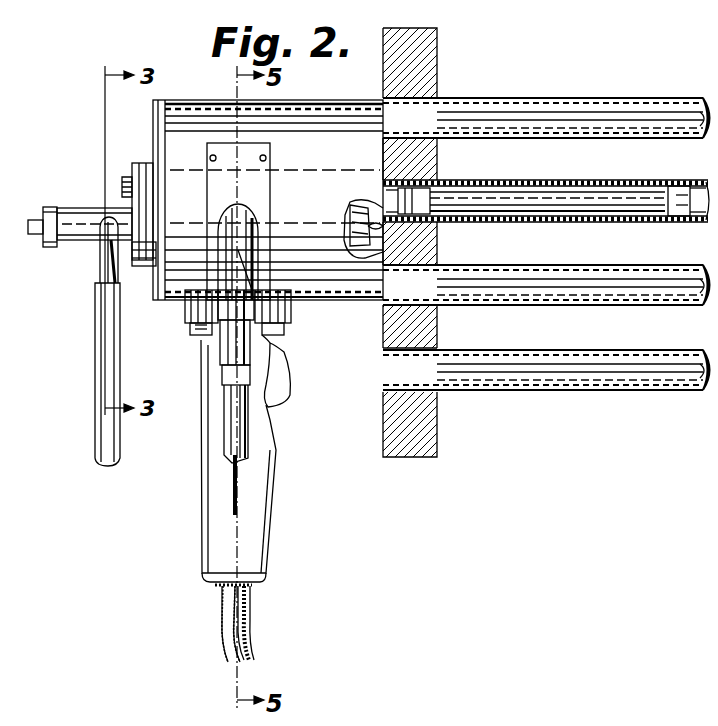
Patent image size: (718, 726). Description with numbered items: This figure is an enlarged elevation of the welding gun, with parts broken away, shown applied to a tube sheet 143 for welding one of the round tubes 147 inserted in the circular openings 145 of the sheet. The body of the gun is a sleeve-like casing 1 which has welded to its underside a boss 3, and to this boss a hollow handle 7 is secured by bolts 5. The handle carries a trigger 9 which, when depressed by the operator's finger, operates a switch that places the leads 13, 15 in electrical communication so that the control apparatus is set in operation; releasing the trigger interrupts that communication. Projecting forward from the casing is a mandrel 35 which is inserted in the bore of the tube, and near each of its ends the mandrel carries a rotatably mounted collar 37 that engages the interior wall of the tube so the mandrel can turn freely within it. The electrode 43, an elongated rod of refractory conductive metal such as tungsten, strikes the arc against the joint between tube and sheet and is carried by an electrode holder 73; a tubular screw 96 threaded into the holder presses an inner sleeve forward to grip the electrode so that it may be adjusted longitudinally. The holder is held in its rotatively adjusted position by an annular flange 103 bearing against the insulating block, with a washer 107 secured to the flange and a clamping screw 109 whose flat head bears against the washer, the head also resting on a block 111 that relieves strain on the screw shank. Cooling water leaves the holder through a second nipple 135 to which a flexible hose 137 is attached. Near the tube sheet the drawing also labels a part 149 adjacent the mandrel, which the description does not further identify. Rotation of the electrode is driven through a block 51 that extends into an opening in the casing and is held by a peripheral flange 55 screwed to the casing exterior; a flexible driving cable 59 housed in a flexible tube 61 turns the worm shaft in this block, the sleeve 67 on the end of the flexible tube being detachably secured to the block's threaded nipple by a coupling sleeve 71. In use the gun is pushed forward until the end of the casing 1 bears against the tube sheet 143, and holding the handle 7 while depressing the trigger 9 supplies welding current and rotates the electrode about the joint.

The casing 1 is at (318, 102).
The boss 3 is at (196, 305).
The bolts 5 is at (200, 330).
The hollow handle 7 is at (206, 486).
The trigger 9 is at (290, 382).
The lead 13 is at (226, 625).
The lead 15 is at (250, 626).
The mandrel 35 is at (532, 202).
The collar 37 is at (426, 196).
The electrode 43 is at (36, 226).
The block 51 is at (290, 302).
The peripheral flange 55 is at (270, 208).
The flexible driving cable 59 is at (240, 485).
The flexible tube 61 is at (236, 428).
The sleeve 67 is at (268, 158).
The coupling sleeve 71 is at (276, 348).
The electrode holder 73 is at (82, 210).
The tubular screw 96 is at (50, 207).
The annular flange 103 is at (143, 268).
The washer 107 is at (110, 256).
The clamping screw 109 is at (124, 182).
The block 111 is at (143, 165).
The second nipple 135 is at (112, 272).
The flexible hose 137 is at (102, 430).
The tube sheet 143 is at (432, 46).
The openings 145 is at (420, 92).
The tubes 147 is at (555, 106).
The knob 149 is at (390, 228).